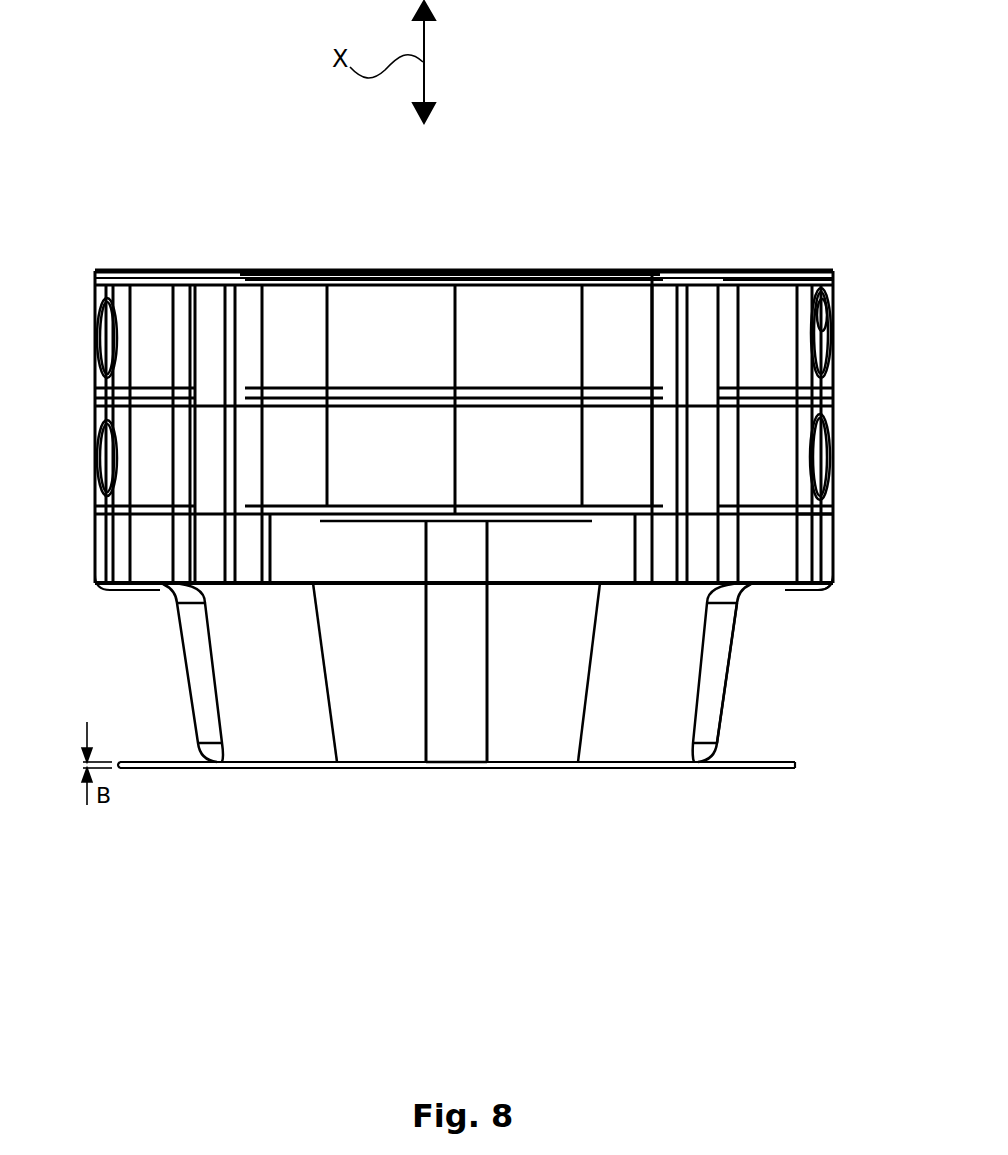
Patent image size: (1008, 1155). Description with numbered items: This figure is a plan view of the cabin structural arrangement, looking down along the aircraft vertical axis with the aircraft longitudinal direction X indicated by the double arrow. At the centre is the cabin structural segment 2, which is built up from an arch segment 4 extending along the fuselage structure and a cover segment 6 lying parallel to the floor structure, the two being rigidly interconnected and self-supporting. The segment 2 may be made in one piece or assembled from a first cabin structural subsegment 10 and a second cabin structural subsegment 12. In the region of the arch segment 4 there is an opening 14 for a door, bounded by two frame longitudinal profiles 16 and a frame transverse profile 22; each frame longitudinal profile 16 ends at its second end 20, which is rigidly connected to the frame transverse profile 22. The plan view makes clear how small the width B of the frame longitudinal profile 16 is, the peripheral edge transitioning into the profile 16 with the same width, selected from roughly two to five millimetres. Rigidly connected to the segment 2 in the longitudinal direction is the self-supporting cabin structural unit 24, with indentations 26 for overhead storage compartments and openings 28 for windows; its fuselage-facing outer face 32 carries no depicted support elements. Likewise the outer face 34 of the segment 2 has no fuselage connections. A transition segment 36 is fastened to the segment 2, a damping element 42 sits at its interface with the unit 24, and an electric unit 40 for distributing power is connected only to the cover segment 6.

The cabin structural segment 2 is at (637, 821).
The arch segment 4 is at (658, 727).
The cover segment 6 is at (525, 735).
The first cabin structural subsegment 10 is at (600, 832).
The second cabin structural subsegment 12 is at (250, 828).
The opening 14 is at (143, 586).
The frame longitudinal profile 16 is at (758, 588).
The second end of the frame longitudinal profile 20 is at (750, 747).
The frame transverse profile 22 is at (703, 710).
The cabin structural unit 24 is at (615, 310).
The indentation 26 is at (700, 297).
The openings for windows 28 is at (832, 305).
The outer face of the cabin structural unit 32 is at (505, 310).
The outer face of the cabin structural segment 34 is at (365, 718).
The transition segment 36 is at (777, 560).
The electric unit 40 is at (457, 727).
The damping element 42 is at (835, 514).